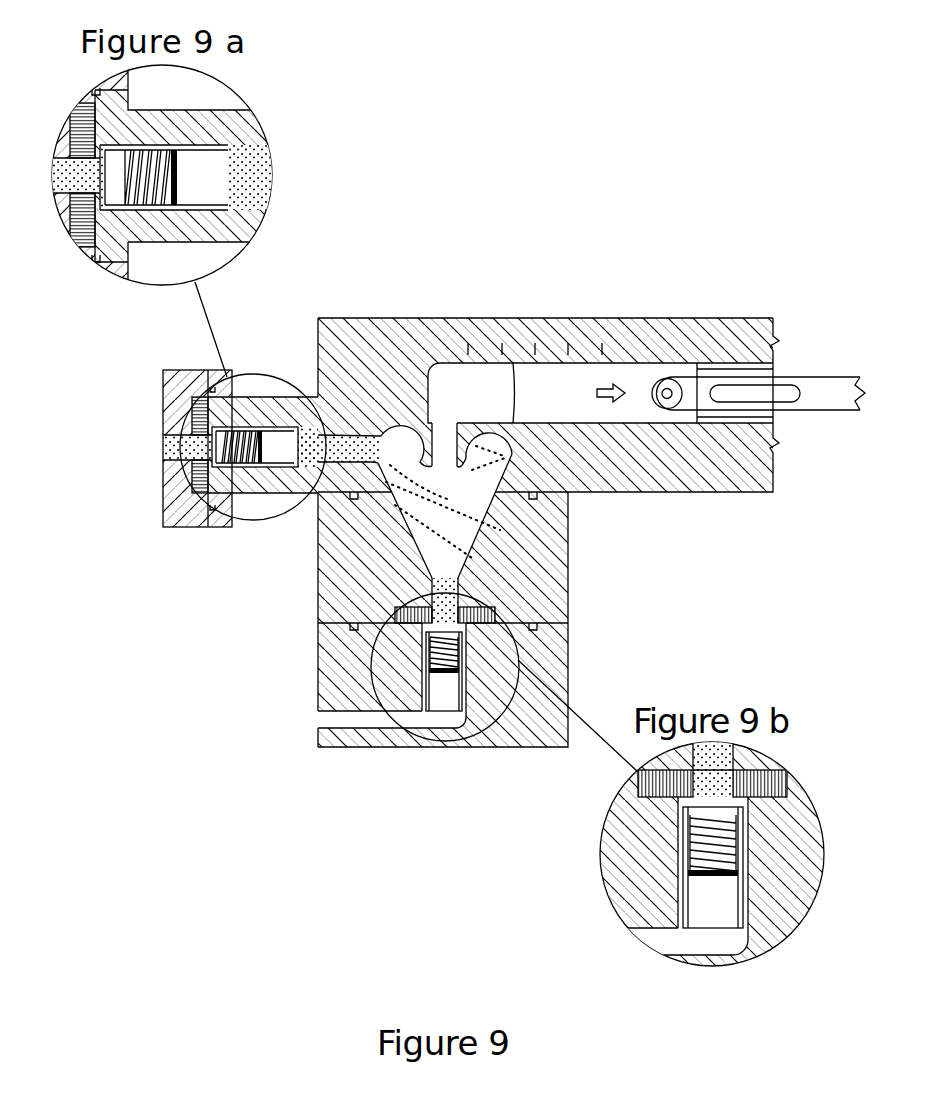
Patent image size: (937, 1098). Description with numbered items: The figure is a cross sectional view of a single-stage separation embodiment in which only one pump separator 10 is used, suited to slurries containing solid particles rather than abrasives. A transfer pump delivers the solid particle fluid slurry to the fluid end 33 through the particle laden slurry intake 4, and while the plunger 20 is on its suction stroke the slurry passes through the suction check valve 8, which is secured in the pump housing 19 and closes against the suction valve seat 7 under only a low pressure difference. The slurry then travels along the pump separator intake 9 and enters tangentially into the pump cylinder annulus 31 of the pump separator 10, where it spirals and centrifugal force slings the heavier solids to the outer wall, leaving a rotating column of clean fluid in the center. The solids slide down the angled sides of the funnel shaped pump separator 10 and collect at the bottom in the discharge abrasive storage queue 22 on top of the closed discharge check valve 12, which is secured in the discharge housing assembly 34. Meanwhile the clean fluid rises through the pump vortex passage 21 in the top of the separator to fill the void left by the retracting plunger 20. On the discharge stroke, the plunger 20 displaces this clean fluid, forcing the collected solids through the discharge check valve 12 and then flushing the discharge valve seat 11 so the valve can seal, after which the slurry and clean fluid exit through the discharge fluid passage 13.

In FIG. 9, the particle laden slurry intake 4 is at (136, 444).
In FIG. 9, the suction valve seat 7 is at (200, 412).
In FIG. 9, the suction check valve 8 is at (213, 440).
In FIG. 9, the pump separator intake 9 is at (374, 453).
In FIG. 9, the pump separator 10 is at (410, 543).
In FIG. 9, the discharge valve seat 11 is at (394, 621).
In FIG. 9b, the discharge valve seat 11 is at (655, 783).
In FIG. 9, the discharge check valve 12 is at (436, 632).
In FIG. 9b, the discharge check valve 12 is at (710, 805).
In FIG. 9, the discharge fluid passage 13 is at (318, 717).
In FIG. 9, the pump housing 19 is at (428, 342).
In FIG. 9, the plunger 20 is at (555, 382).
In FIG. 9, the pump vortex passage 21 is at (450, 468).
In FIG. 9, the discharge abrasive storage queue 22 is at (448, 593).
In FIG. 9b, the discharge abrasive storage queue 22 is at (716, 768).
In FIG. 9, the pump cylinder annulus 31 is at (512, 453).
In FIG. 9, the fluid end 33 is at (318, 578).
In FIG. 9, the discharge housing assembly 34 is at (540, 667).